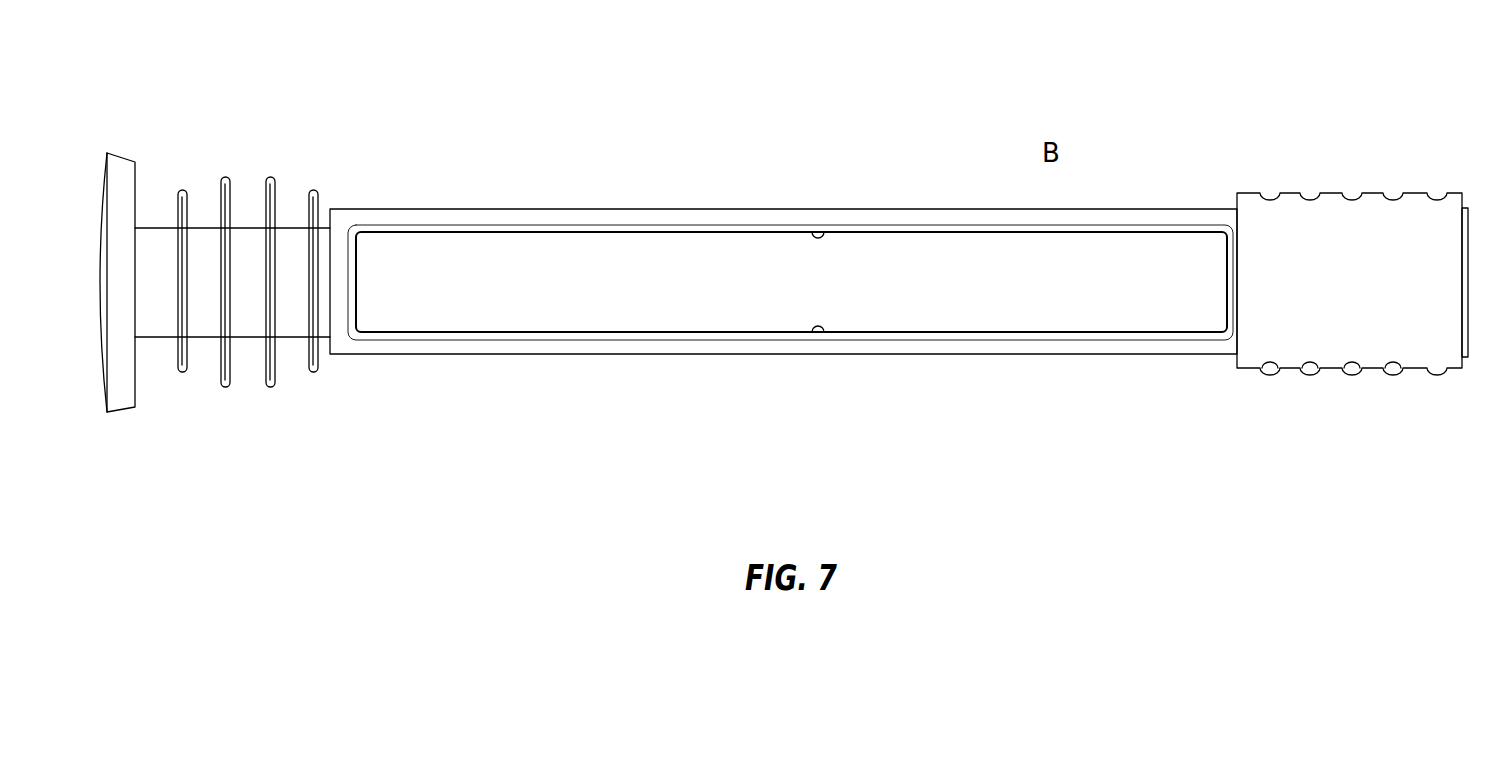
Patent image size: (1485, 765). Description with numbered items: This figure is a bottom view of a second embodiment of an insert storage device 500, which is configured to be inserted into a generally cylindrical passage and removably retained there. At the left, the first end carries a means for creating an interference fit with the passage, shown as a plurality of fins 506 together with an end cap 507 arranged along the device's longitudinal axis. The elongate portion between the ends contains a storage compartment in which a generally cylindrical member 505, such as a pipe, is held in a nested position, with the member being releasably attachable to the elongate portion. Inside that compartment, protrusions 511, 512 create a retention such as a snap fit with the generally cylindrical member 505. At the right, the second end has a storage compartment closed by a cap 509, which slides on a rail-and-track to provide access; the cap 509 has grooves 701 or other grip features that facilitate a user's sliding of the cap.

The insert storage device 500 is at (174, 76).
The generally cylindrical member 505 is at (582, 302).
The fins 506 is at (186, 369).
The end cap 507 is at (122, 373).
The cap 509 is at (1327, 235).
The protrusion 511 is at (820, 232).
The protrusion 512 is at (820, 333).
The grooves 701 is at (1393, 368).